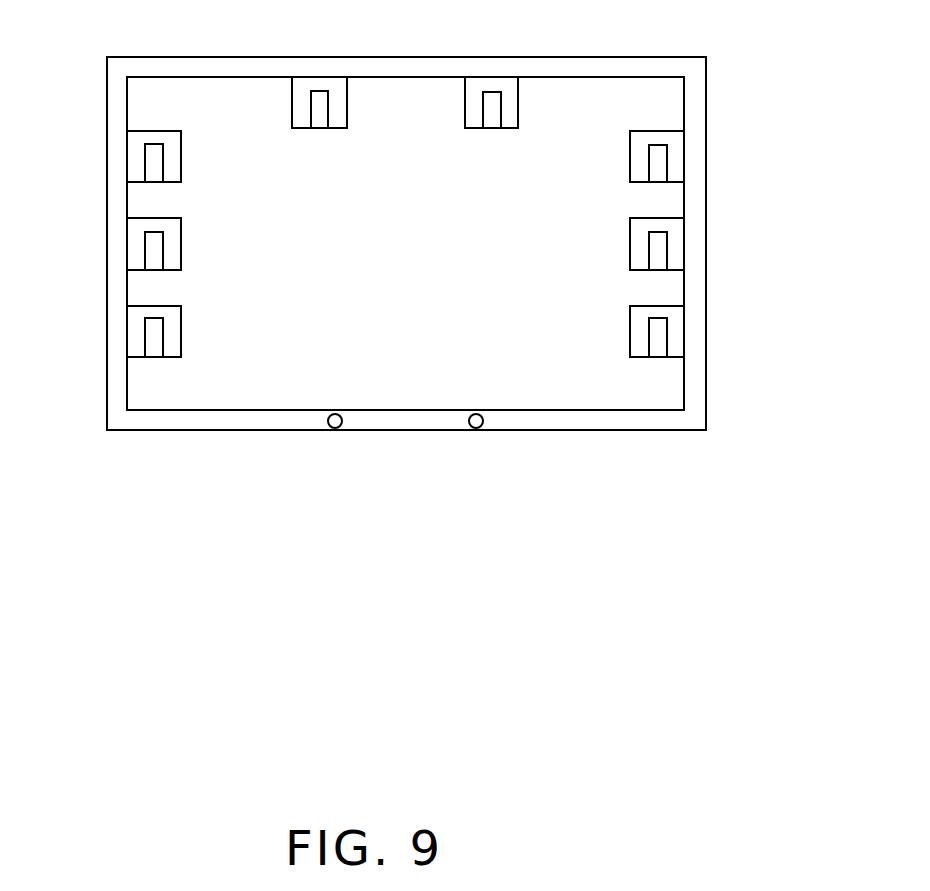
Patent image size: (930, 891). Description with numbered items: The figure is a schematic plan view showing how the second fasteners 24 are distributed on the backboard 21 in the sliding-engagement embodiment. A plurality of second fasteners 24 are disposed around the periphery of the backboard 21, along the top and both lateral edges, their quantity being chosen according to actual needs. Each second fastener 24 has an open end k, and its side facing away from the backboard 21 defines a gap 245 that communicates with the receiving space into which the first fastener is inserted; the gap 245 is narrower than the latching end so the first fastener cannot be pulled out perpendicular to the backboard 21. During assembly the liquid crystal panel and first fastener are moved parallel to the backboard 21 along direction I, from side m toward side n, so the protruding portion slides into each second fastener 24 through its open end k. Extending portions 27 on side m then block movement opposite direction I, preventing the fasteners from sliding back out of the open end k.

The backboard 21 is at (612, 91).
The second fastener 24 is at (677, 146).
The gap 245 is at (660, 167).
The extending portion 27 is at (478, 427).
The open end k is at (170, 357).
The side n of the backboard n is at (55, 80).
The side m of the backboard m is at (57, 419).
The direction I is at (746, 376).